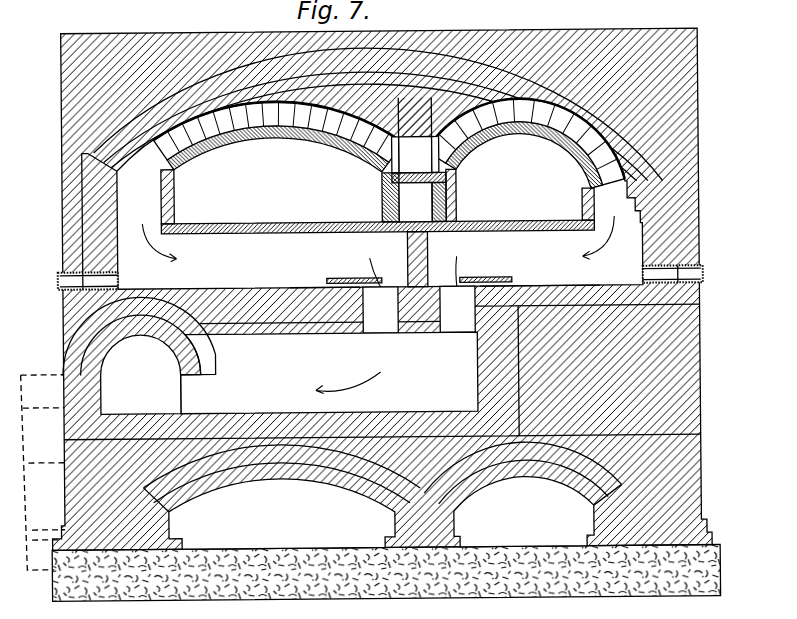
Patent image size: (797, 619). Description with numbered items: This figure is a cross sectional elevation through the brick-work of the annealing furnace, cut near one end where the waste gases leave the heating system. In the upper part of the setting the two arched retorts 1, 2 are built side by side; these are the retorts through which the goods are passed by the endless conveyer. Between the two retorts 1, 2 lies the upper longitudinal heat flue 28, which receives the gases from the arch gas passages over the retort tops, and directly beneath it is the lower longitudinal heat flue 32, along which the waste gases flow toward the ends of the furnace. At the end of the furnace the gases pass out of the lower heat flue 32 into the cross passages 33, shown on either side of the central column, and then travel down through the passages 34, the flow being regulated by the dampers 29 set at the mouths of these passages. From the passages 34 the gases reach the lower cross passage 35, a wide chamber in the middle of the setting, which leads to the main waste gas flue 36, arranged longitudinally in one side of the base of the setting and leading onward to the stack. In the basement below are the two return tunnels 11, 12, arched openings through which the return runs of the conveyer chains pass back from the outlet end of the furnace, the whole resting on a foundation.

The retort 1 is at (278, 162).
The retort 2 is at (526, 160).
The upper longitudinal heat flue 28 is at (415, 154).
The lower longitudinal heat flue 32 is at (422, 201).
The damper 29 is at (332, 279).
The cross passage 33 is at (445, 268).
The downward passage 34 is at (419, 309).
The lower cross passage 35 is at (270, 354).
The main waste gas flue 36 is at (140, 375).
The return tunnel 11 is at (282, 497).
The return tunnel 12 is at (523, 494).